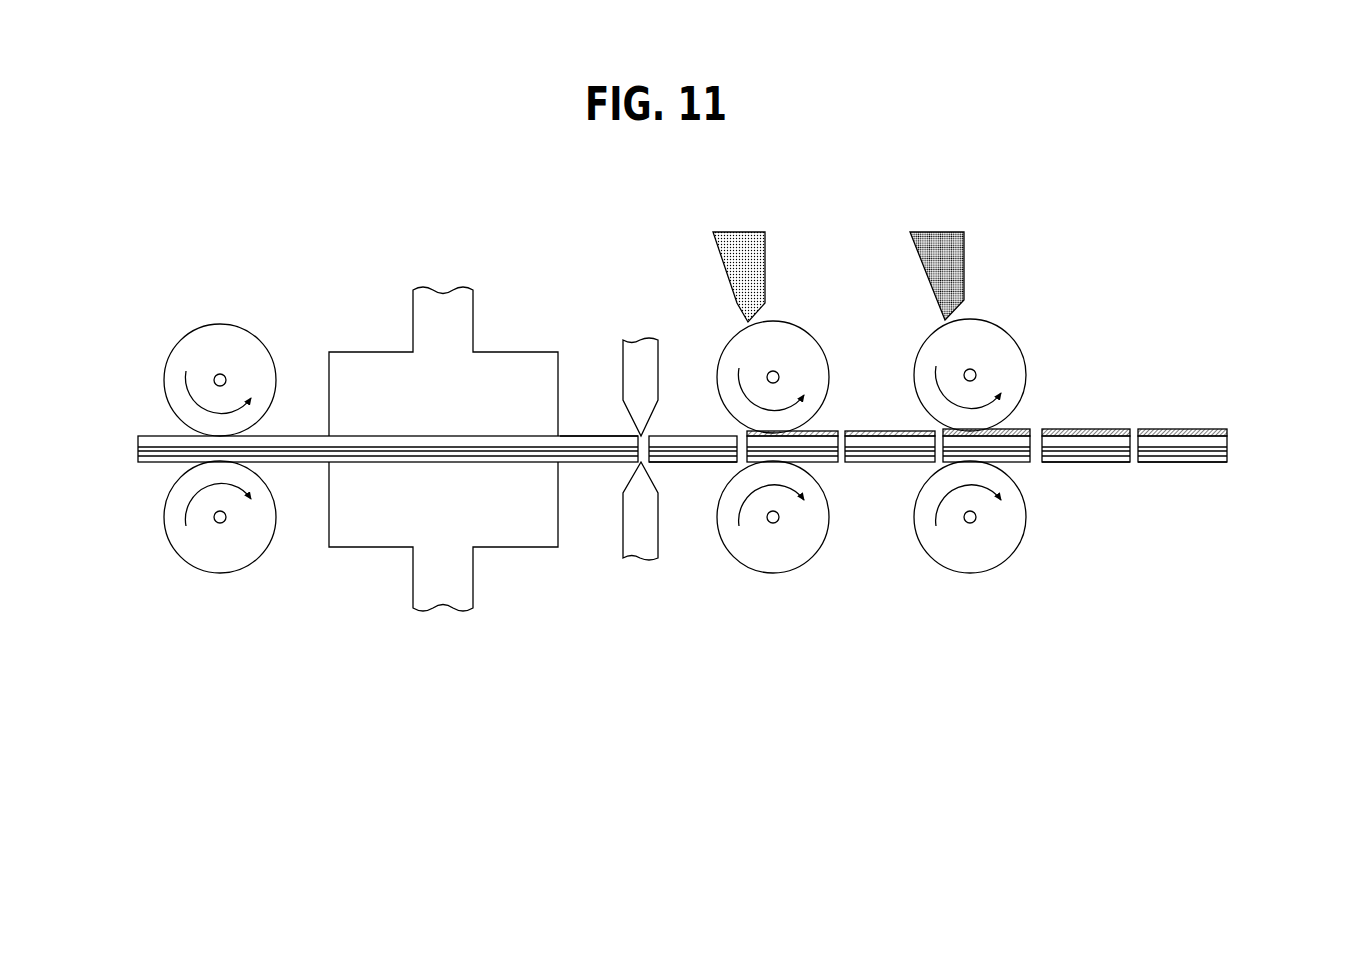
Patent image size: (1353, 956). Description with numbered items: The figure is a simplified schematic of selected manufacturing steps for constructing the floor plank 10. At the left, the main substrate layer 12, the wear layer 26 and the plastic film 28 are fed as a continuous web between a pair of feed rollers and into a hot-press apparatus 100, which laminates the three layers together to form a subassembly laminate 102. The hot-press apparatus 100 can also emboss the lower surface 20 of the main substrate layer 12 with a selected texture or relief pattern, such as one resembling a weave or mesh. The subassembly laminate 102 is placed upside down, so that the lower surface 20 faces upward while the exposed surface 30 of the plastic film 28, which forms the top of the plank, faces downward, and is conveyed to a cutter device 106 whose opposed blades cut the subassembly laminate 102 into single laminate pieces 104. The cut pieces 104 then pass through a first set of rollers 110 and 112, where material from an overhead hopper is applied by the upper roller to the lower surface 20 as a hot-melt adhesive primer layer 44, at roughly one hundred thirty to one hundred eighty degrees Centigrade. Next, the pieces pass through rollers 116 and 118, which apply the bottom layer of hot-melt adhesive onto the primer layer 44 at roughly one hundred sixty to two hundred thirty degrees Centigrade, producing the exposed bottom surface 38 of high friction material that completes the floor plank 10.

The floor plank 10 is at (1097, 393).
The main substrate layer 12 is at (138, 440).
The lower surface 20 is at (165, 435).
The wear layer 26 is at (138, 451).
The plastic film 28 is at (138, 459).
The exposed surface 30 is at (1180, 463).
The exposed bottom surface 38 is at (1030, 429).
The primer layer 44 is at (843, 431).
The hot-press apparatus 100 is at (362, 350).
The subassembly laminate 102 is at (589, 432).
The single laminate pieces 104 is at (696, 466).
The cutter device 106 is at (641, 336).
The first set of rollers 110 is at (815, 331).
The first set of rollers 112 is at (818, 556).
The rollers 116 is at (1011, 329).
The rollers 118 is at (1013, 556).